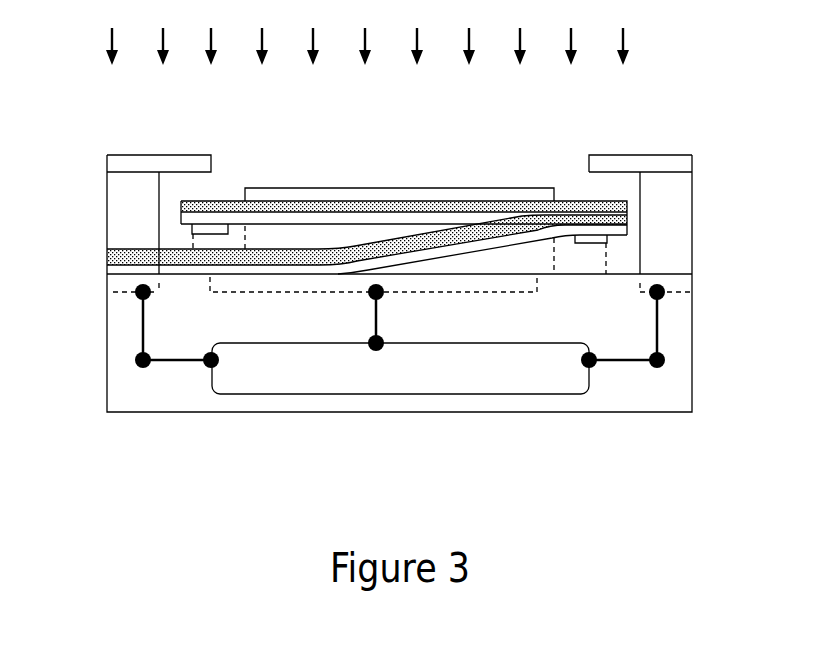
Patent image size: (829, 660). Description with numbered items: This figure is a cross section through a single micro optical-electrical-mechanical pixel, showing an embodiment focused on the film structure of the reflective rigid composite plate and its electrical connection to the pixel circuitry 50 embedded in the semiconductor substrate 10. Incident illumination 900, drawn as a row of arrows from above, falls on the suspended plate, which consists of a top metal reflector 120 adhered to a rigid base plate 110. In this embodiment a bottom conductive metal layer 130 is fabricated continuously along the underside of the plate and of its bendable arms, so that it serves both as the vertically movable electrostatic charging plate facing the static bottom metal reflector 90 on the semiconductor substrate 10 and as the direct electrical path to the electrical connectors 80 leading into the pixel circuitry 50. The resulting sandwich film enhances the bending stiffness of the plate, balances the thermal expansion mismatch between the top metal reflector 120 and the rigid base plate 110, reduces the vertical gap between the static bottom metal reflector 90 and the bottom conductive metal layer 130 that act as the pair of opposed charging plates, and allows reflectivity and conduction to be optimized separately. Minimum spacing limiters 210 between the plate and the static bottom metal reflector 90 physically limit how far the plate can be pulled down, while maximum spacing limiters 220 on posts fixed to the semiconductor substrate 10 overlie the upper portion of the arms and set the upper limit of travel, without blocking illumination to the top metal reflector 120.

The semiconductor substrate 10 is at (572, 412).
The pixel circuitry 50 is at (417, 395).
The electrical connectors 80 is at (113, 283).
The static bottom metal reflector 90 is at (295, 292).
The rigid base plate 110 is at (181, 209).
The top metal reflector 120 is at (378, 190).
The bottom conductive metal layer 130 is at (182, 224).
The minimum spacing limiters 210 is at (604, 240).
The maximum spacing limiters 220 is at (598, 157).
The incident illumination 900 is at (627, 44).